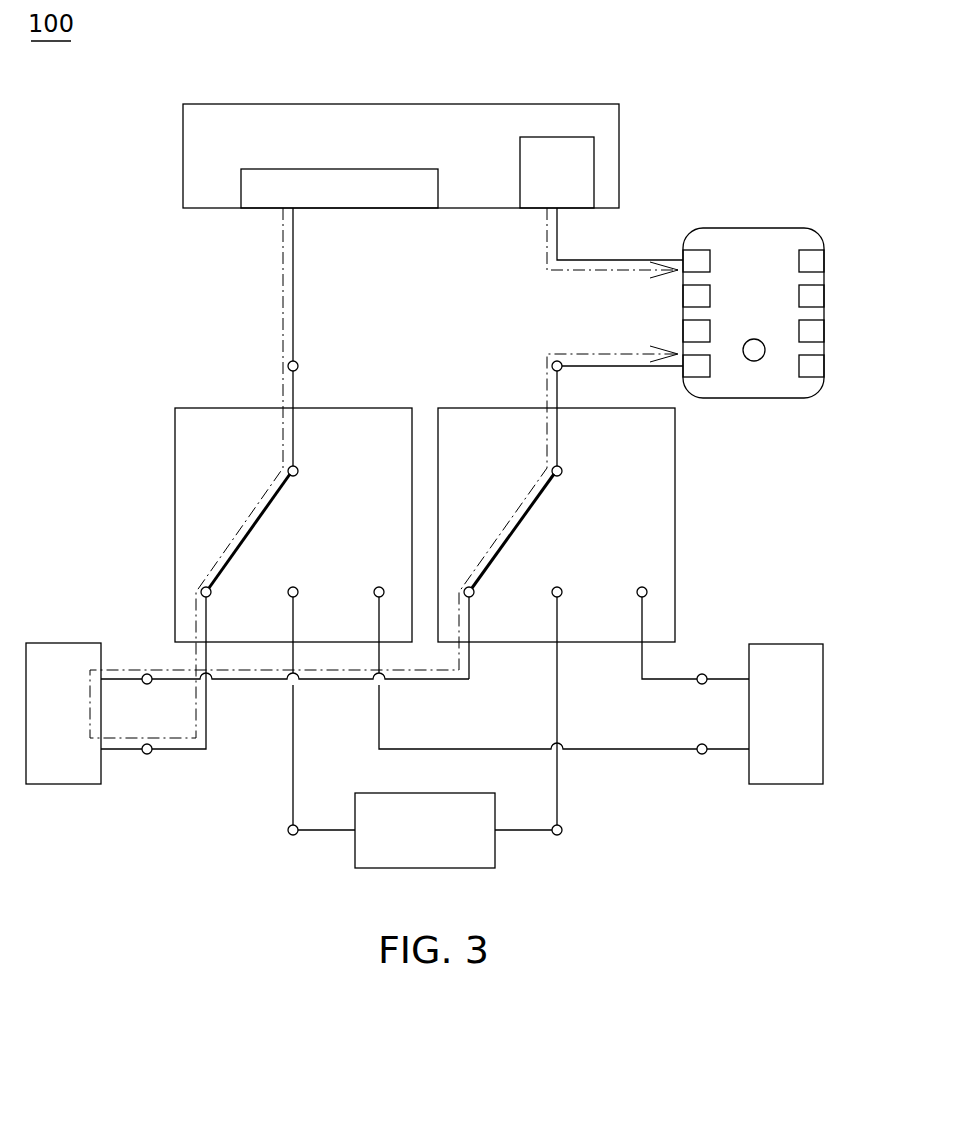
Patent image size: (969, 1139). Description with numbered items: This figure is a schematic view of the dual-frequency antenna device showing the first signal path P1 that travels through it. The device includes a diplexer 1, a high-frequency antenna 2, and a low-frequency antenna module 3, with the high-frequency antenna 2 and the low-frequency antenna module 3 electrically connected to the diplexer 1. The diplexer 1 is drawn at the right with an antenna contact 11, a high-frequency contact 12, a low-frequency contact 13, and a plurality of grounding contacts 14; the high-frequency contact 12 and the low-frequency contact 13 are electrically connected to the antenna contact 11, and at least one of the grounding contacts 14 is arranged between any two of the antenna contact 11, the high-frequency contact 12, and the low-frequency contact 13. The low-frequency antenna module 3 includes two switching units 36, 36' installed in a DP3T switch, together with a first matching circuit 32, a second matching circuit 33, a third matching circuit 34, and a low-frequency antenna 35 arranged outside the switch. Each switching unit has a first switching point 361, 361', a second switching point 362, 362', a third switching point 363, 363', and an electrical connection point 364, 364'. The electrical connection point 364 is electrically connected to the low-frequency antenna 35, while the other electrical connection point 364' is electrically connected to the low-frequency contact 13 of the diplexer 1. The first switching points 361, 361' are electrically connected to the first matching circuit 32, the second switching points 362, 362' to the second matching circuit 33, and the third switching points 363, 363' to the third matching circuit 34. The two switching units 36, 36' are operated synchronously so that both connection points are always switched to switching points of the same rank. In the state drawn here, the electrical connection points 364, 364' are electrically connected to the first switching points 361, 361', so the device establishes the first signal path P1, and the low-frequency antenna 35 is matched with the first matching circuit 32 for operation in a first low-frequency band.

The diplexer 1 is at (757, 228).
The antenna contact 11 is at (810, 293).
The high-frequency contact 12 is at (697, 258).
The low-frequency contact 13 is at (698, 372).
The grounding contacts 14 is at (809, 258).
The high-frequency antenna 2 is at (590, 173).
The low-frequency antenna 35 is at (355, 210).
The first signal path P1 is at (282, 277).
The low-frequency antenna module 3 is at (156, 400).
The first matching circuit 32 is at (65, 643).
The second matching circuit 33 is at (385, 793).
The third matching circuit 34 is at (792, 644).
The switching unit 36 is at (253, 506).
The first switching point 361 is at (166, 661).
The second switching point 362 is at (315, 680).
The third switching point 363 is at (528, 640).
The electrical connection point 364 is at (251, 289).
The switching unit 36' is at (601, 506).
The first switching point 361' is at (470, 602).
The second switching point 362' is at (579, 680).
The third switching point 363' is at (657, 603).
The electrical connection point 364' is at (573, 289).